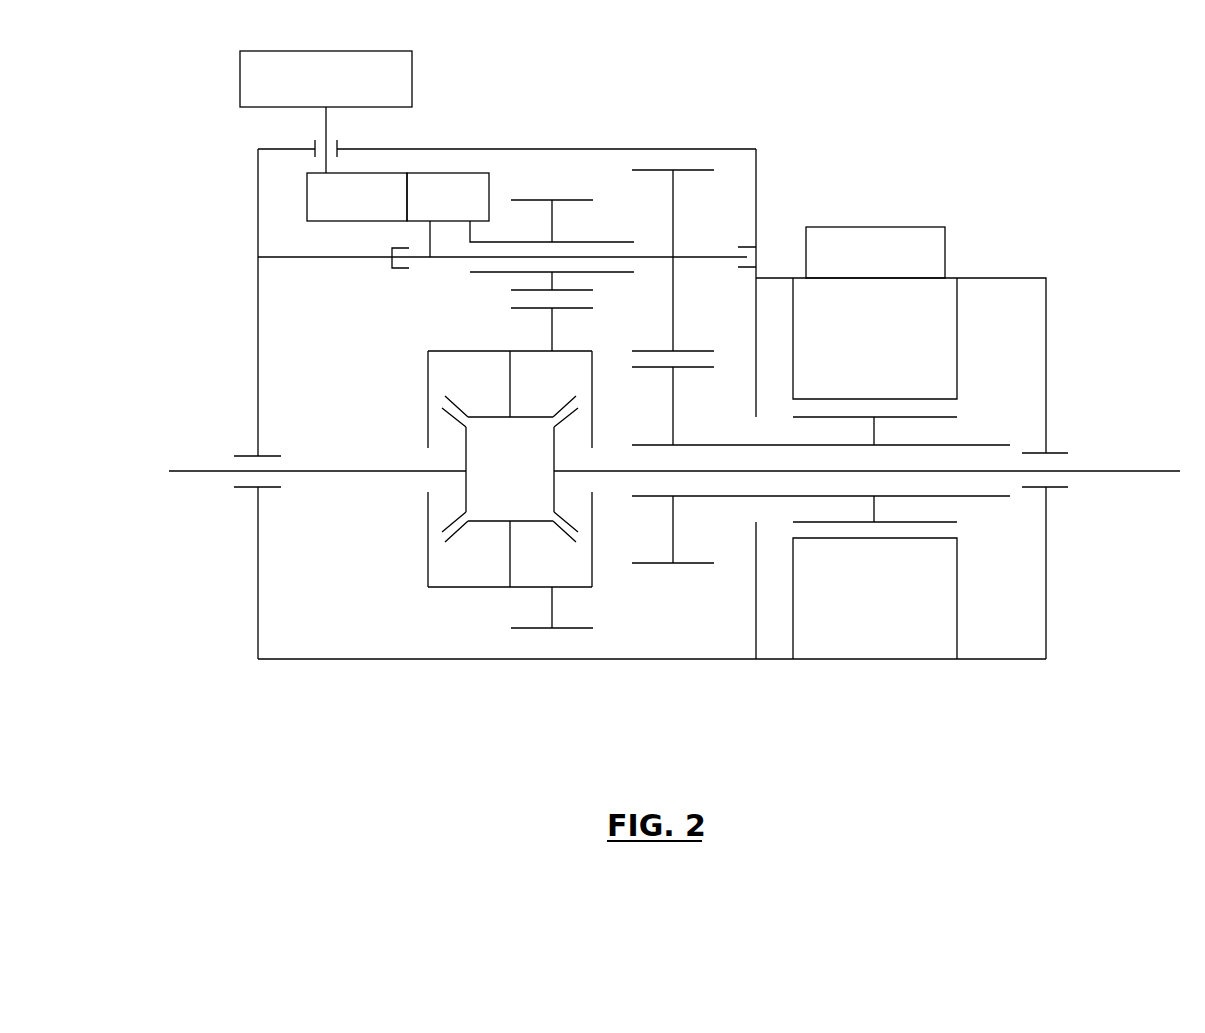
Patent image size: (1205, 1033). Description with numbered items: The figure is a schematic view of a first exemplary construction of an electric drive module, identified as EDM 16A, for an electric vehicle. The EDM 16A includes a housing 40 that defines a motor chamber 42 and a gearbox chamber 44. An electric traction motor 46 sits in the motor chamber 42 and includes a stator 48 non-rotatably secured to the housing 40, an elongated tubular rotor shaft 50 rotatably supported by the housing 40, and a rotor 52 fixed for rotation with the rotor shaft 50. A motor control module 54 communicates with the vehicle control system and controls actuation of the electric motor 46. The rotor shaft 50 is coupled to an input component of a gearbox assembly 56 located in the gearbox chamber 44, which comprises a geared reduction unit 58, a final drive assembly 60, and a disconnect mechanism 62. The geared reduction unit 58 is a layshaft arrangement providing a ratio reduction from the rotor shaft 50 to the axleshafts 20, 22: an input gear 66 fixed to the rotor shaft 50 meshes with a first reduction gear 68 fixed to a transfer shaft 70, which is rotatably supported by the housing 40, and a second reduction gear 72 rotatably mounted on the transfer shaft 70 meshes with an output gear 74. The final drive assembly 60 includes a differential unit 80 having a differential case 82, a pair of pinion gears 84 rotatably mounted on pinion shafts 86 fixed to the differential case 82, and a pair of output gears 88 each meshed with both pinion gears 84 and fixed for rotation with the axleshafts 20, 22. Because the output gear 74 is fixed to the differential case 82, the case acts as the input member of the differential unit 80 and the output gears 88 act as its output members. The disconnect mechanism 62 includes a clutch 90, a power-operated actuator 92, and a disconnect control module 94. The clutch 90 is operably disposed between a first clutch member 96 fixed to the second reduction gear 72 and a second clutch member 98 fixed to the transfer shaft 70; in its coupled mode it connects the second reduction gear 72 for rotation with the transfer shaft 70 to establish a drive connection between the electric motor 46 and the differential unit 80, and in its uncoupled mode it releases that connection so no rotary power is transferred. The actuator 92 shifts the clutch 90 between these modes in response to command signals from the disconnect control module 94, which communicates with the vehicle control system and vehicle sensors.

The electric drive module 16A is at (690, 85).
The axleshaft 20 is at (187, 469).
The axleshaft 22 is at (1125, 470).
The housing 40 is at (1046, 343).
The motor chamber 42 is at (914, 472).
The gearbox chamber 44 is at (352, 376).
The electric traction motor 46 is at (975, 330).
The stator 48 is at (901, 650).
The rotor shaft 50 is at (985, 447).
The rotor 52 is at (934, 522).
The motor control module 54 is at (942, 233).
The gearbox assembly 56 is at (424, 599).
The geared reduction unit 58 is at (744, 220).
The final drive assembly 60 is at (603, 593).
The disconnect mechanism 62 is at (552, 221).
The input gear 66 is at (690, 566).
The first reduction gear 68 is at (698, 170).
The transfer shaft 70 is at (693, 257).
The second reduction gear 72 is at (566, 200).
The output gear 74 is at (566, 630).
The differential unit 80 is at (504, 530).
The differential case 82 is at (428, 388).
The pinion gears 84 is at (492, 417).
The pinion shafts 86 is at (511, 392).
The output gears 88 is at (552, 447).
The clutch 90 is at (418, 180).
The power-operated actuator 92 is at (307, 196).
The disconnect control module 94 is at (396, 66).
The first clutch member 96 is at (474, 233).
The second clutch member 98 is at (430, 230).